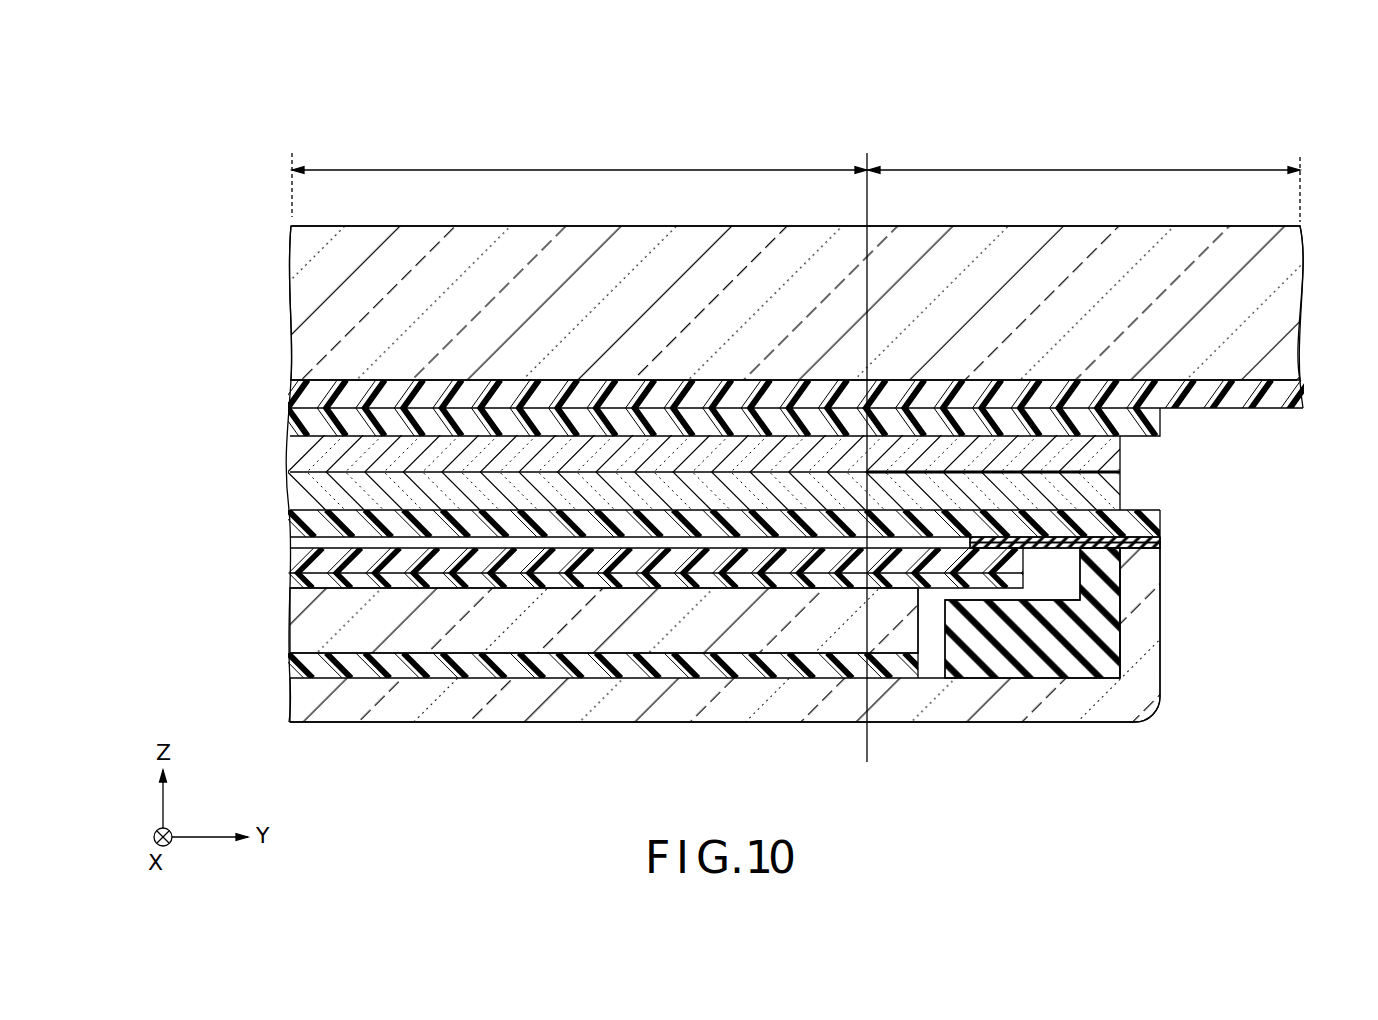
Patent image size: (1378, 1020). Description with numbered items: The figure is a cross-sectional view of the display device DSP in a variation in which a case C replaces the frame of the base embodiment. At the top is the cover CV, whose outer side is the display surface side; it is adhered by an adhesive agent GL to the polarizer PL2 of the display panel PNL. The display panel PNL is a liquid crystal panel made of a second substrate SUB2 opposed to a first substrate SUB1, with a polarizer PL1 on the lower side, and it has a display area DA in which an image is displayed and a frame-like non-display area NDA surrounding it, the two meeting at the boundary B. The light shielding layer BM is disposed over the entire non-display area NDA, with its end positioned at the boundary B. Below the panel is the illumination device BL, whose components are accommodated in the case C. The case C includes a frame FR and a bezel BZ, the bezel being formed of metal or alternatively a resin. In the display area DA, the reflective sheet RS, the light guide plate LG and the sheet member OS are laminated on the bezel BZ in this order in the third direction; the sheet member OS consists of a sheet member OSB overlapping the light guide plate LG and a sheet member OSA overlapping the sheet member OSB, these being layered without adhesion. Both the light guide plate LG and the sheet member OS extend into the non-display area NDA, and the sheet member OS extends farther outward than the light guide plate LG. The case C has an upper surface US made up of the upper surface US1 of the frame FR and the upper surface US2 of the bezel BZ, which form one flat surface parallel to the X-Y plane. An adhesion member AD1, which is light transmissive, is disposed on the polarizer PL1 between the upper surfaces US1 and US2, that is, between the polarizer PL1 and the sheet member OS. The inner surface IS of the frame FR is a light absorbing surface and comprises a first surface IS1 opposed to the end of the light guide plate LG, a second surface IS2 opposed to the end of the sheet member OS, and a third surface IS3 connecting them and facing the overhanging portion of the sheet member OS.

The display device DSP is at (1280, 127).
The cover CV is at (298, 343).
The adhesive agent GL is at (300, 398).
The polarizer PL2 is at (298, 430).
The display panel PNL is at (174, 458).
The second substrate SUB2 is at (298, 452).
The light shielding layer BM is at (1097, 487).
The first substrate SUB1 is at (298, 490).
The polarizer PL1 is at (298, 527).
The upper surface US is at (1150, 509).
The upper surface of the frame US1 is at (1110, 537).
The upper surface of the bezel US2 is at (1140, 546).
The sheet member OS is at (591, 581).
The sheet member OSA is at (300, 562).
The sheet member OSB is at (300, 583).
The light guide plate LG is at (300, 629).
The reflective sheet RS is at (300, 659).
The frame FR is at (1110, 659).
The adhesion member AD1 is at (1100, 568).
The illumination device BL is at (1265, 600).
The bezel BZ is at (1140, 620).
The case C is at (760, 728).
The inner surface IS is at (999, 690).
The first surface IS1 is at (944, 634).
The second surface IS2 is at (1074, 588).
The third surface IS3 is at (1027, 592).
The boundary B is at (868, 445).
The display area DA is at (604, 170).
The non-display area NDA is at (1092, 170).